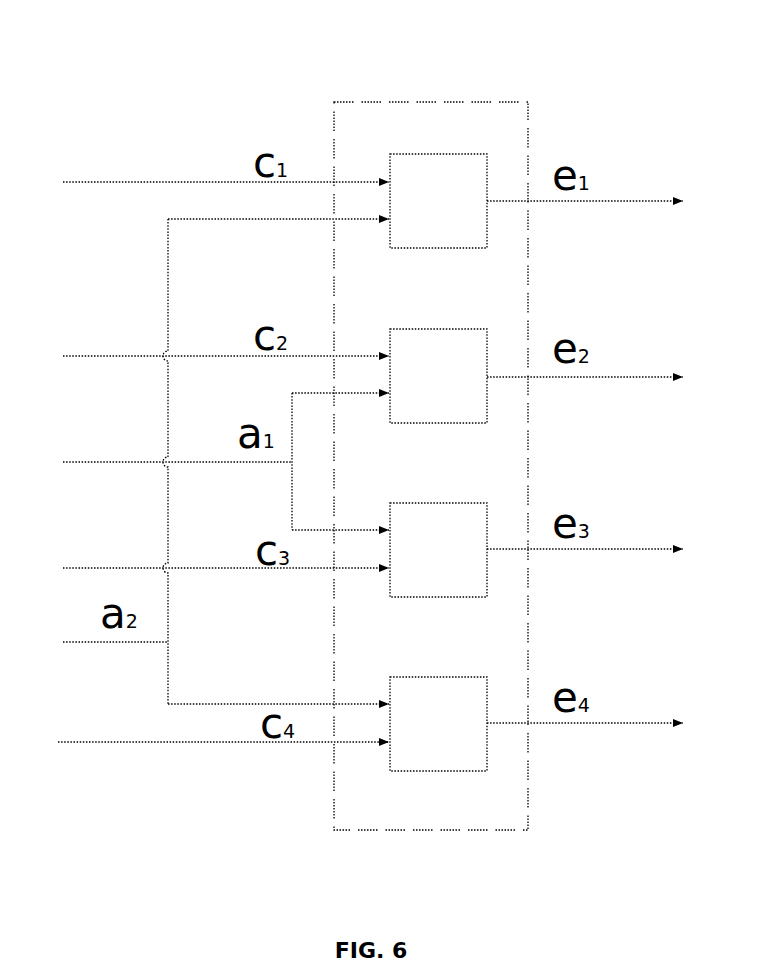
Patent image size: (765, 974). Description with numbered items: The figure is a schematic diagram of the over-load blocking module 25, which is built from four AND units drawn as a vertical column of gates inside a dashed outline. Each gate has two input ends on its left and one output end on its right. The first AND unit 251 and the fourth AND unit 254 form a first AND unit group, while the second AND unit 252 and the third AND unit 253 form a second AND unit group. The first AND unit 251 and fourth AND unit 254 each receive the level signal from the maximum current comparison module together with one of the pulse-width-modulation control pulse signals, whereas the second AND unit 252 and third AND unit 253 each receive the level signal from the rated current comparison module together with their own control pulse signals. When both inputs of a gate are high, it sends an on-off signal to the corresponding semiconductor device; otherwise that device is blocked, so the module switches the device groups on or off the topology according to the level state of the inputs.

The over-load blocking module 25 is at (412, 100).
The first AND unit 251 is at (488, 181).
The second AND unit 252 is at (488, 353).
The third AND unit 253 is at (488, 521).
The fourth AND unit 254 is at (488, 698).